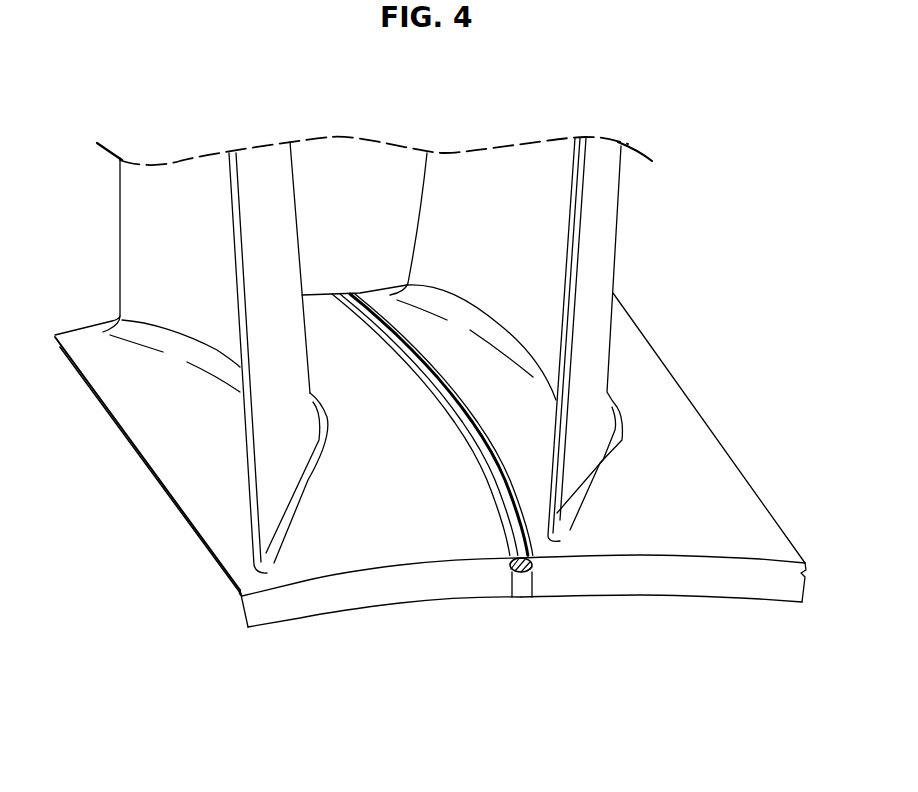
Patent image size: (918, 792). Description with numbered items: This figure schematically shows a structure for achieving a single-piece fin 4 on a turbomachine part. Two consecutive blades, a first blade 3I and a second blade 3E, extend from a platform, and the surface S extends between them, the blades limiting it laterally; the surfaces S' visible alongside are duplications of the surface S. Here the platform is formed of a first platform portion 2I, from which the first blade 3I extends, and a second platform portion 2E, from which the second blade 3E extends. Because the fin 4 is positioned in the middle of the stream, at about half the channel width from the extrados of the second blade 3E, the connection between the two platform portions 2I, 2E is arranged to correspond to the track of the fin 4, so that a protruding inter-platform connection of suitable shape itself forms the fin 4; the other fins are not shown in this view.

The second blade 3E is at (180, 265).
The first blade 3I is at (597, 240).
The surface S is at (213, 457).
The surfaces S' is at (553, 424).
The first platform portion 2I is at (372, 533).
The second platform portion 2E is at (650, 522).
The fin 4 is at (538, 572).